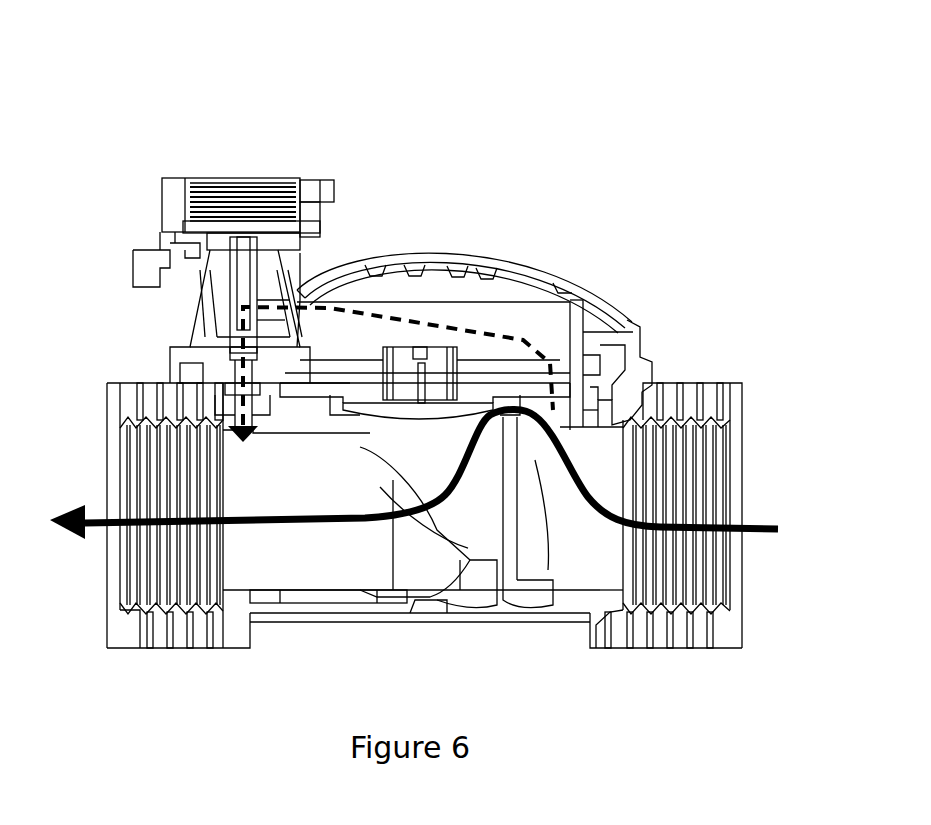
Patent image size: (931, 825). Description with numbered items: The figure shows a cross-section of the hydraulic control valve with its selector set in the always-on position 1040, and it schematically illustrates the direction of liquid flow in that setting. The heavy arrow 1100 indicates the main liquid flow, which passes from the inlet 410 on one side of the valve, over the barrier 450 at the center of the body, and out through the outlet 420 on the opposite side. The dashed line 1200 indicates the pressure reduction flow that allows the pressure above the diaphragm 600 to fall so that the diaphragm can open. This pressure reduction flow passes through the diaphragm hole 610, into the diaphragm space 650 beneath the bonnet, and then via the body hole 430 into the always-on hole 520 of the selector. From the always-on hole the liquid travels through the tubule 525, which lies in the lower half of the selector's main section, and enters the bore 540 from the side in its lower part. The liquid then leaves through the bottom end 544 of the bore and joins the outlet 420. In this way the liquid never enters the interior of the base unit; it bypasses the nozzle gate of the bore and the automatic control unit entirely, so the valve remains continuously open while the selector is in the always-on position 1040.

The always-on position 1040 is at (430, 100).
The tubule 525 is at (263, 292).
The always-on hole 520 is at (294, 289).
The bore 540 is at (234, 334).
The bottom end of the bore 544 is at (232, 428).
The outlet 420 is at (101, 458).
The inlet 410 is at (738, 563).
The body hole 430 is at (312, 302).
The diaphragm space 650 is at (340, 329).
The pressure reduction flow 1200 is at (527, 328).
The diaphragm 600 is at (526, 369).
The diaphragm hole 610 is at (563, 371).
The barrier 450 is at (506, 463).
The main liquid flow 1100 is at (282, 546).